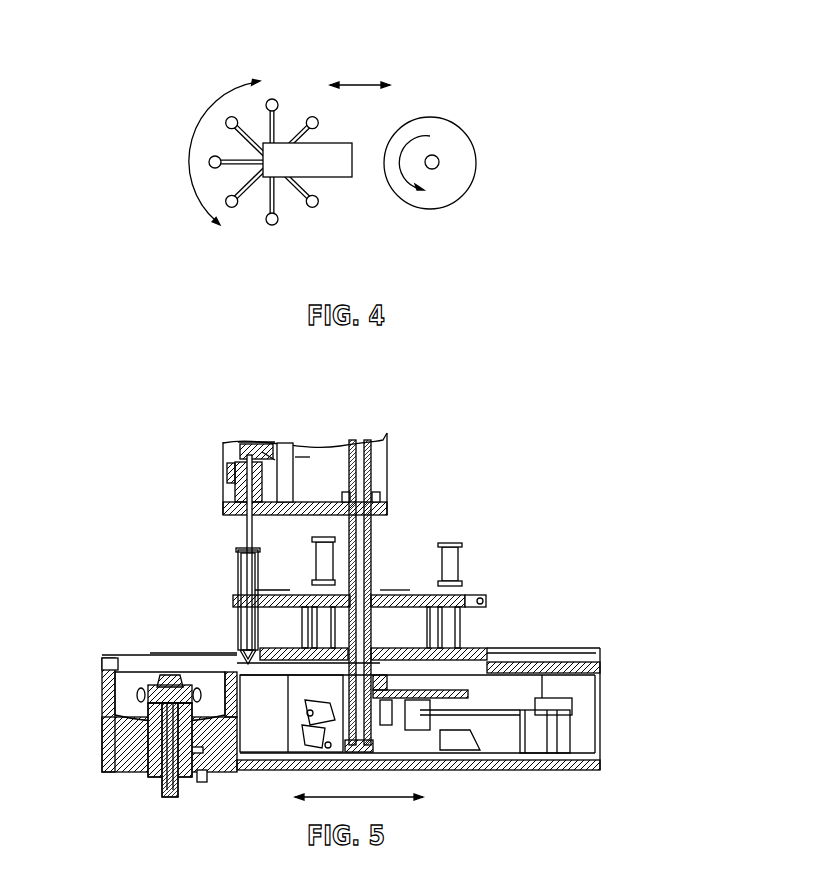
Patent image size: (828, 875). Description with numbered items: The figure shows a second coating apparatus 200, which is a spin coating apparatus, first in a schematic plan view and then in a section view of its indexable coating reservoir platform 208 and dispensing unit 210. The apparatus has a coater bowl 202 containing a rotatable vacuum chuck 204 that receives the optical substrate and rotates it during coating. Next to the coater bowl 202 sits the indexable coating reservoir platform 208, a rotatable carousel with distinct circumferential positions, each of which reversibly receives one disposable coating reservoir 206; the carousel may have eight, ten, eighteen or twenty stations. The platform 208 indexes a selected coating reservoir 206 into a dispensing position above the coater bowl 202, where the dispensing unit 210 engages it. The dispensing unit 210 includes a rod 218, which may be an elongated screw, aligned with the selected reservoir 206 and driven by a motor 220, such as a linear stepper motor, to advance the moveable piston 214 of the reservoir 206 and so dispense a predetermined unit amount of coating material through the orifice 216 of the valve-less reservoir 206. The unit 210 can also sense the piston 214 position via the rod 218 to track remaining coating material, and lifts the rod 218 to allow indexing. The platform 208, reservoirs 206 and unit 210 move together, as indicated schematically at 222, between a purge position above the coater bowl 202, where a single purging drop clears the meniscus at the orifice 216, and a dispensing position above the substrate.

In FIG. 4, the second coating apparatus 200 is at (583, 57).
In FIG. 5, the second coating apparatus 200 is at (614, 471).
In FIG. 4, the coater bowl 202 is at (428, 118).
In FIG. 5, the coater bowl 202 is at (123, 695).
In FIG. 4, the rotatable vacuum chuck 204 is at (436, 156).
In FIG. 5, the rotatable vacuum chuck 204 is at (165, 780).
In FIG. 4, the coating reservoir 206 is at (285, 98).
In FIG. 5, the coating reservoir 206 is at (460, 578).
In FIG. 4, the indexable coating reservoir platform 208 is at (247, 197).
In FIG. 5, the indexable coating reservoir platform 208 is at (392, 593).
In FIG. 4, the dispensing unit 210 is at (352, 152).
In FIG. 5, the dispensing unit 210 is at (228, 488).
In FIG. 5, the moveable piston 214 is at (240, 626).
In FIG. 5, the orifice 216 is at (243, 653).
In FIG. 5, the rod 218 is at (247, 538).
In FIG. 5, the motor 220 is at (232, 462).
In FIG. 4, the movement as a unit 222 is at (353, 82).
In FIG. 5, the movement as a unit 222 is at (355, 797).